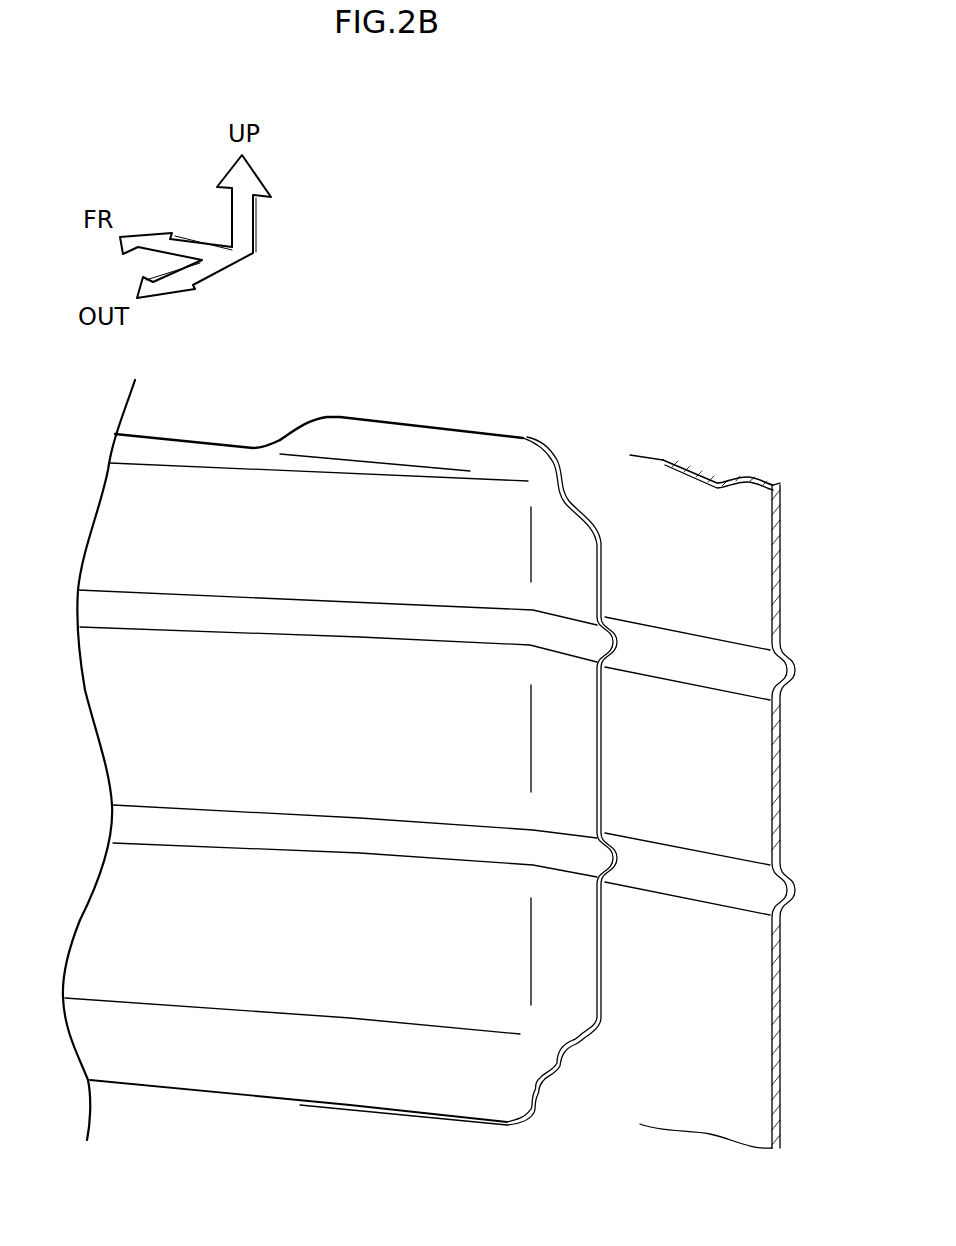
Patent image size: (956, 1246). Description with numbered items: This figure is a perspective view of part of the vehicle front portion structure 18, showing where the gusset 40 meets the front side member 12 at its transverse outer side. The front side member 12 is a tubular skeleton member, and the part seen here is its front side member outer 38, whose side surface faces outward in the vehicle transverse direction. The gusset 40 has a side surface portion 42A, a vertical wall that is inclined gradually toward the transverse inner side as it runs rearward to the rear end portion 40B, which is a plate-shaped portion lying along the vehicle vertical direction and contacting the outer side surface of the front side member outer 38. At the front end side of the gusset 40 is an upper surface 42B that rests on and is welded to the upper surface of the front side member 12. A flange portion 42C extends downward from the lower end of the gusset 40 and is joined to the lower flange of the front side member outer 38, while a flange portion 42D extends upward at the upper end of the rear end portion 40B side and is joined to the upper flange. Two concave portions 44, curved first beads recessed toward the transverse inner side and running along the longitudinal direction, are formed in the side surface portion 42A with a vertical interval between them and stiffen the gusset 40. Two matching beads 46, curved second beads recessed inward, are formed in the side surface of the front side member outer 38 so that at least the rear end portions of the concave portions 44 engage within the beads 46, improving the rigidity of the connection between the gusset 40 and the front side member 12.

The vehicle front portion structure 18 is at (371, 720).
The front side member outer 38 is at (700, 760).
The front side member 12 is at (700, 760).
The gusset 40 is at (371, 762).
The rear end portion 40B is at (567, 562).
The side surface portion 42A is at (333, 983).
The upper surface 42B is at (157, 455).
The flange portion 42C is at (405, 1082).
The flange portion 42D is at (432, 440).
The concave portions 44 is at (588, 643).
The beads 46 is at (673, 665).